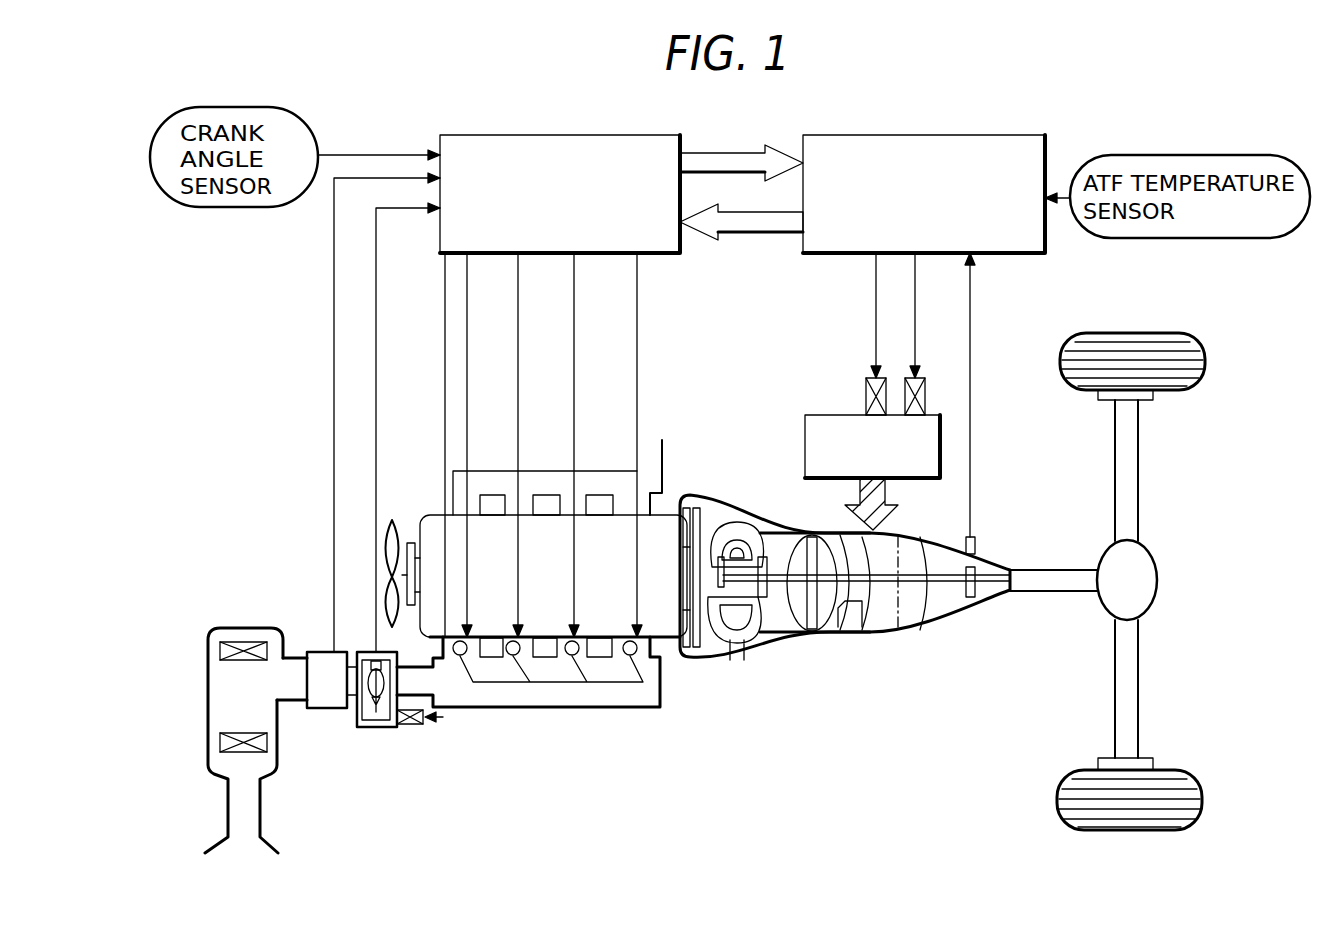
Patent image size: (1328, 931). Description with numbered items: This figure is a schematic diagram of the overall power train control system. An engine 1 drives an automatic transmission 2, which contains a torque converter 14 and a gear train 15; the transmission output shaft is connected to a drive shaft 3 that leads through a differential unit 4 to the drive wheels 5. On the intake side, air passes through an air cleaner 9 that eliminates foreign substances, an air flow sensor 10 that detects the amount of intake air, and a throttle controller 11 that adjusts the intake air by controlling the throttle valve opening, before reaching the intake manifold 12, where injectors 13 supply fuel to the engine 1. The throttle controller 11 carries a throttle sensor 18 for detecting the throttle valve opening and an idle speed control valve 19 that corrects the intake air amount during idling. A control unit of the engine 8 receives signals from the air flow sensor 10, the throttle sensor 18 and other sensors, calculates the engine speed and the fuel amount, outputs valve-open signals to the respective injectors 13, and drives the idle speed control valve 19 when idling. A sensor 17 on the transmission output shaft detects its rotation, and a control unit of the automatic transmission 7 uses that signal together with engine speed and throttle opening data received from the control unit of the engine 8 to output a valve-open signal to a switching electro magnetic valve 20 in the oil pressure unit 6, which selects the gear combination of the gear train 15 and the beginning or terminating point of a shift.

The engine 1 is at (668, 645).
The automatic transmission 2 is at (790, 640).
The drive shaft 3 is at (1046, 600).
The differential unit 4 is at (1142, 553).
The drive wheel 5 is at (1185, 333).
The oil pressure unit 6 is at (940, 443).
The control unit of the automatic transmission (ATCU) 7 is at (990, 147).
The control unit of the engine (ECU) 8 is at (640, 147).
The air cleaner 9 is at (240, 627).
The air flow sensor 10 is at (333, 709).
The throttle controller 11 is at (378, 728).
The intake manifold 12 is at (550, 709).
The injector 13 is at (468, 638).
The torque converter 14 is at (730, 645).
The gear train 15 is at (886, 630).
The sensor for detecting the rotation of the transmission output shaft 17 is at (975, 538).
The throttle sensor 18 is at (375, 661).
The idle speed control valve (ISC valve) 19 is at (418, 726).
The switching electro magnetic valve 20 is at (866, 380).